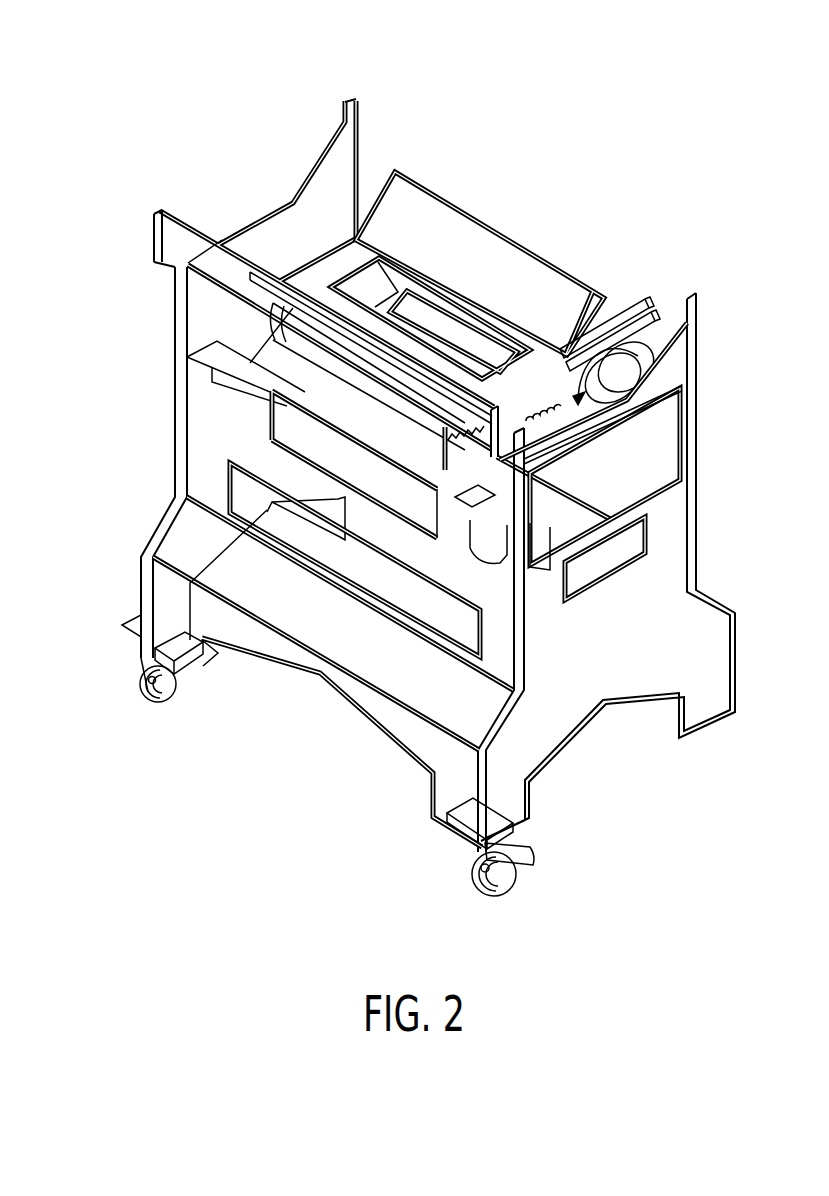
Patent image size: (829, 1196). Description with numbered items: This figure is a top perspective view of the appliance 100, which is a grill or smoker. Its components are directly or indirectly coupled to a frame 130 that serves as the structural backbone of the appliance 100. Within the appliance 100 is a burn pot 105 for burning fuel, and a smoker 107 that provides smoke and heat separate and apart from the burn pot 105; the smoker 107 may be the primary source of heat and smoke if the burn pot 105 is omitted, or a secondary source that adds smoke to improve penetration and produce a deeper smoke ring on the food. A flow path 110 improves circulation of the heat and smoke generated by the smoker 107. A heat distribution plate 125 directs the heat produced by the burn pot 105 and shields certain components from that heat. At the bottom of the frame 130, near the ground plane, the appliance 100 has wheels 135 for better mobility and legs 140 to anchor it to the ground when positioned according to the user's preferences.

The appliance 100 is at (655, 102).
The burn pot 105 is at (337, 403).
The smoker 107 is at (632, 395).
The flow path 110 is at (568, 355).
The heat distribution plate 125 is at (527, 283).
The frame 130 is at (528, 746).
The wheels 135 is at (152, 692).
The legs 140 is at (700, 702).